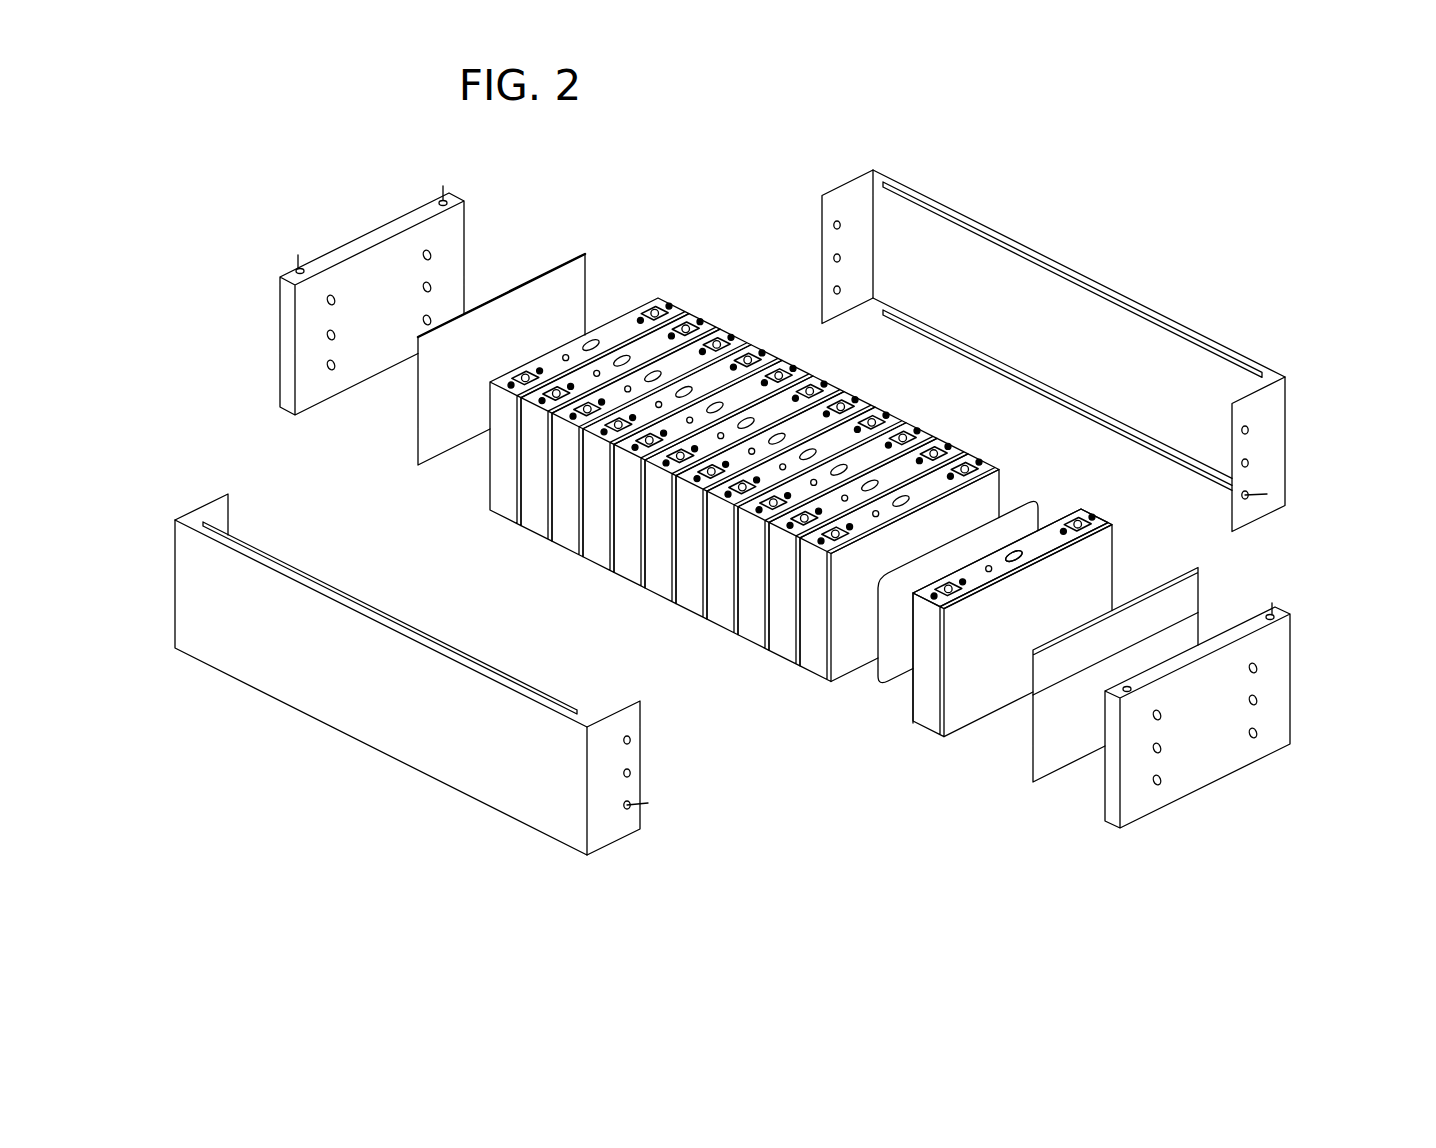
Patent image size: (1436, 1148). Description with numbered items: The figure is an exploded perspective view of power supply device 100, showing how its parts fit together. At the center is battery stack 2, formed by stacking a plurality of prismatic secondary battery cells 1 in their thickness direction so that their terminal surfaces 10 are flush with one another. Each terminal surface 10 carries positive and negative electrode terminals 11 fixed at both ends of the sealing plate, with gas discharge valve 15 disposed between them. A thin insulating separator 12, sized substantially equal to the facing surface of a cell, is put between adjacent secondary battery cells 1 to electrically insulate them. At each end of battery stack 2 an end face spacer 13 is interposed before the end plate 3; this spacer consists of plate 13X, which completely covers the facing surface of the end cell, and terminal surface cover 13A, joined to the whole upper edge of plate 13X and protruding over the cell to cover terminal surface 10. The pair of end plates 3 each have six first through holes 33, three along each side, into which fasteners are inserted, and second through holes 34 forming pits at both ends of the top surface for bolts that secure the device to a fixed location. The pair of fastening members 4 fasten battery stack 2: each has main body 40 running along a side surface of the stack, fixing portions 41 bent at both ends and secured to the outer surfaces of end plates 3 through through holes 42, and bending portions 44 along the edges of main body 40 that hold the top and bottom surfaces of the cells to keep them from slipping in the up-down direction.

The power supply device 100 is at (1197, 205).
The secondary battery cell 1 is at (794, 551).
The battery stack 2 is at (473, 568).
The end plate 3 is at (801, 513).
The fastening member 4 is at (774, 548).
The terminal surface 10 is at (1025, 545).
The positive and negative electrode terminals 11 is at (1078, 517).
The separator 12 is at (957, 553).
The end face spacer 13 is at (765, 558).
The terminal surface cover 13A is at (1160, 582).
The plate 13X is at (572, 290).
The gas discharge valve 15 is at (990, 553).
The first through hole 33 is at (328, 302).
The second through hole 34 is at (440, 197).
The main body 40 is at (1115, 330).
The fixing portion 41 is at (832, 240).
The through hole 42 is at (1250, 500).
The bending portion 44 is at (1015, 240).